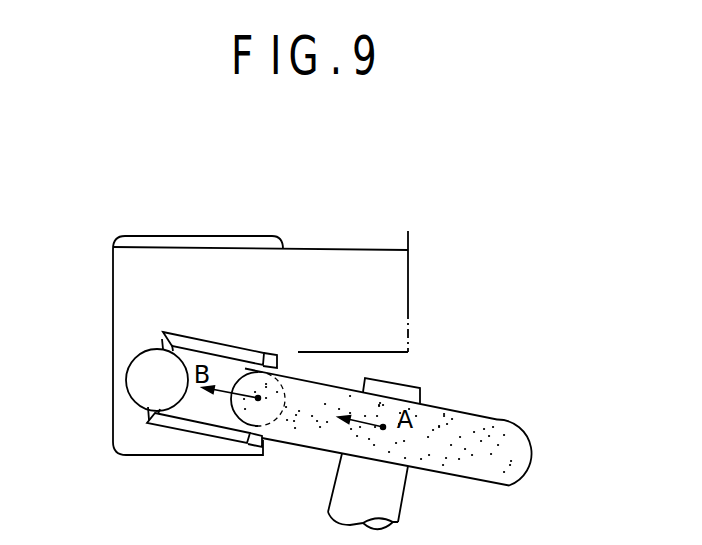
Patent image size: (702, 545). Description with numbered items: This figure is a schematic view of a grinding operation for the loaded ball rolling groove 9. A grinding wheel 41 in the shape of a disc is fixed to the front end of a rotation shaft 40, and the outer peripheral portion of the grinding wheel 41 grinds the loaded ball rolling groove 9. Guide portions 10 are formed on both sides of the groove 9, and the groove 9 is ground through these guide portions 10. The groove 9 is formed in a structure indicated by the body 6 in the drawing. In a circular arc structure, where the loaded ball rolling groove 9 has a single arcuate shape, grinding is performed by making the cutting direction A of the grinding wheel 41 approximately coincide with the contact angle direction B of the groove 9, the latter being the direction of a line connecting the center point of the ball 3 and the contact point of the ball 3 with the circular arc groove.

The ball 3 is at (274, 418).
The block 6 is at (337, 265).
The loaded ball rolling groove 9 is at (243, 424).
The guide portions 10 is at (280, 365).
The rotation shaft 40 is at (388, 502).
The grinding wheel 41 is at (460, 430).